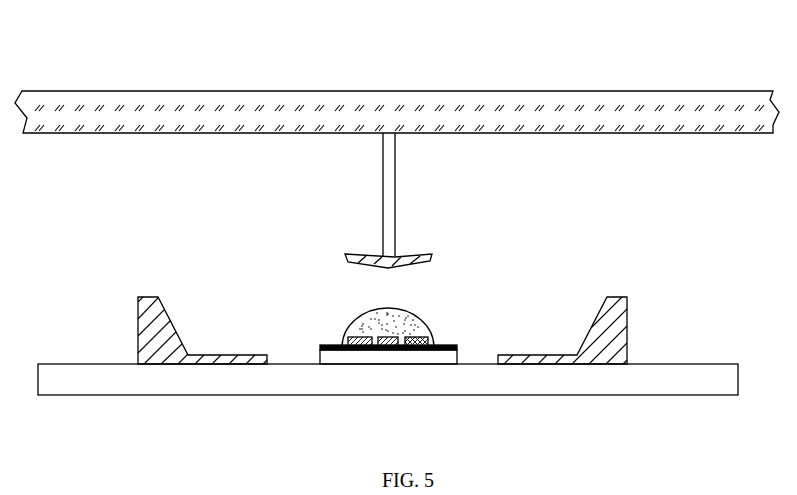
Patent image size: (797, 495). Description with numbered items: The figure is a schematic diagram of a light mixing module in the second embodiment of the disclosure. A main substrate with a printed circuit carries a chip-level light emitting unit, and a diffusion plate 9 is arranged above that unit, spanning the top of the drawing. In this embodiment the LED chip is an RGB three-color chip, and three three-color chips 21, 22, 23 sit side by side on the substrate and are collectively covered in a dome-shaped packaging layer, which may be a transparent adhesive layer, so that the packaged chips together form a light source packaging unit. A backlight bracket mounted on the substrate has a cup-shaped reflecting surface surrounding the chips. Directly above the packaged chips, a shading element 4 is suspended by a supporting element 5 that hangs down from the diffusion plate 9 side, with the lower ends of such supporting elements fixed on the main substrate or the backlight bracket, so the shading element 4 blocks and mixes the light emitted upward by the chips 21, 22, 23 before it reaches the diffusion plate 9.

The diffusion plate 9 is at (97, 108).
The supporting element 5 is at (394, 198).
The shading element 4 is at (345, 254).
The three-color chip 21 is at (358, 348).
The three-color chip 22 is at (390, 348).
The three-color chip 23 is at (417, 348).